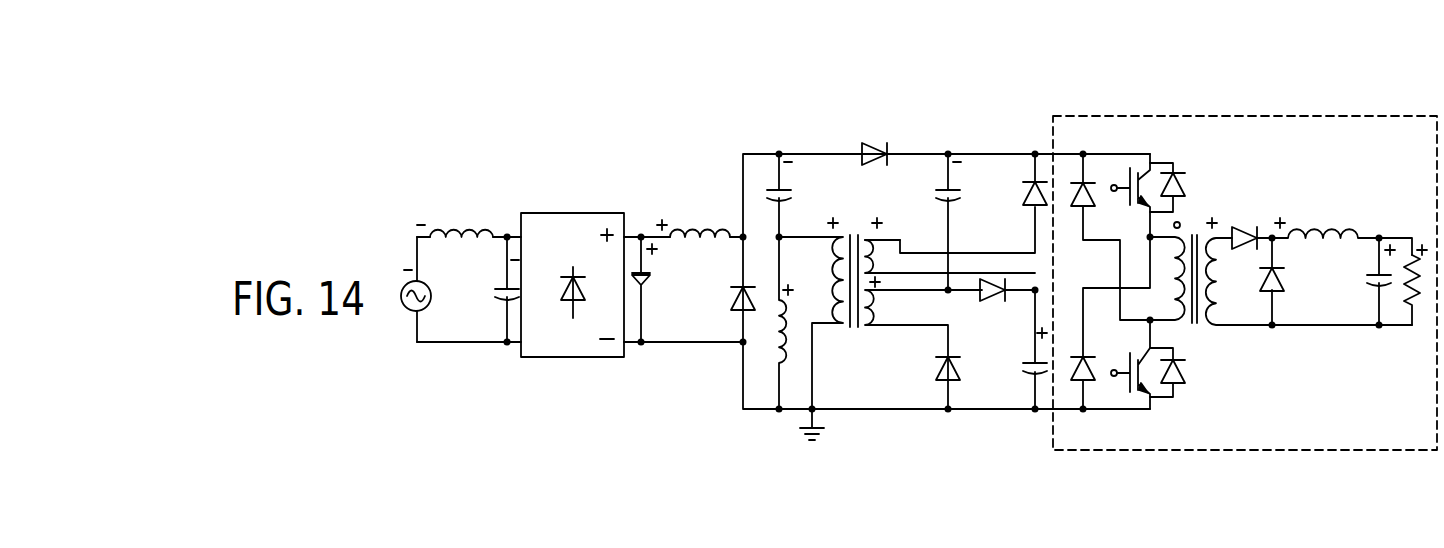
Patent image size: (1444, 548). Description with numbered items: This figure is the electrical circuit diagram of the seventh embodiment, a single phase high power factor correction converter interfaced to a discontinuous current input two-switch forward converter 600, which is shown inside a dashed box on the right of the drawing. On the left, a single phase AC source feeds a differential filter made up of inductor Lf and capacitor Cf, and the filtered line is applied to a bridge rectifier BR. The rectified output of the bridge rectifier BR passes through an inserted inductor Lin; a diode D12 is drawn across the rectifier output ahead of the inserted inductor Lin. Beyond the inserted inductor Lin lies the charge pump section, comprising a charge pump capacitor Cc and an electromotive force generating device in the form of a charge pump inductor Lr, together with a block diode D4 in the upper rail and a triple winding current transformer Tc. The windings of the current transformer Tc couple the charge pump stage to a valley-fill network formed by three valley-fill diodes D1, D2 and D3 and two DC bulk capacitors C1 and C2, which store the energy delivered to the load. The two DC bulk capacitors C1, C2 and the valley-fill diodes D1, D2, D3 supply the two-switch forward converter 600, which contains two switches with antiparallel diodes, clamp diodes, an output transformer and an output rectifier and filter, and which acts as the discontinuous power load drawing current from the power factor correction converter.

The two-switch forward converter 600 is at (1243, 115).
The inductor Lf is at (461, 213).
The capacitor Cf is at (490, 289).
The bridge rectifier BR is at (575, 358).
The diode D12 is at (649, 280).
The inserted inductor Lin is at (700, 213).
The charge pump inductor Lr is at (768, 323).
The charge pump capacitor Cc is at (792, 195).
The triple winding current transformer Tc is at (907, 302).
The block diode D4 is at (870, 128).
The DC bulk capacitor C1 is at (932, 222).
The valley-fill diode D2 is at (956, 203).
The valley-fill diode D3 is at (1007, 308).
The valley-fill diode D1 is at (929, 373).
The DC bulk capacitor C2 is at (1016, 349).